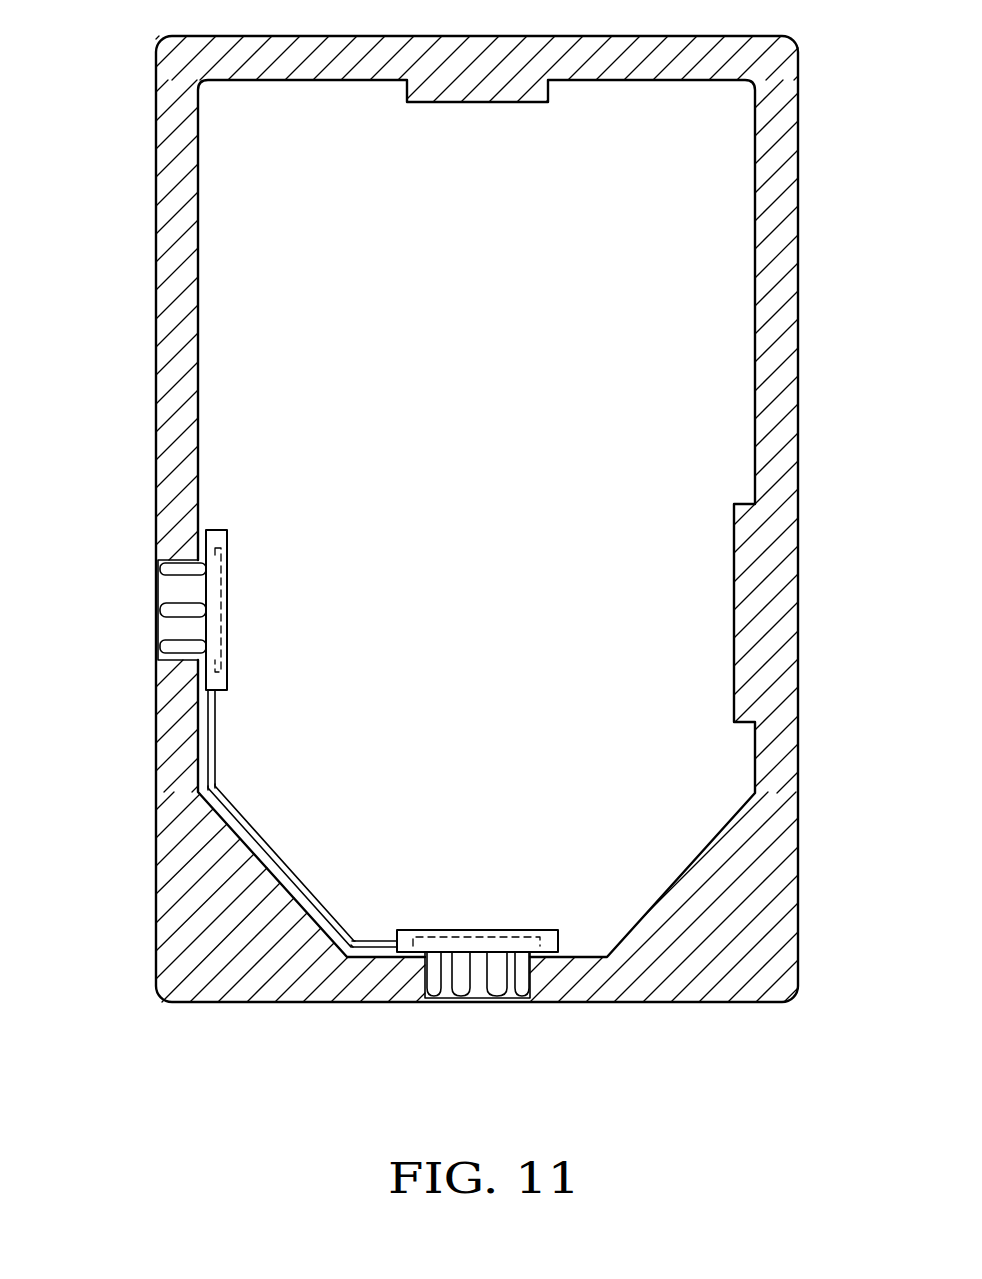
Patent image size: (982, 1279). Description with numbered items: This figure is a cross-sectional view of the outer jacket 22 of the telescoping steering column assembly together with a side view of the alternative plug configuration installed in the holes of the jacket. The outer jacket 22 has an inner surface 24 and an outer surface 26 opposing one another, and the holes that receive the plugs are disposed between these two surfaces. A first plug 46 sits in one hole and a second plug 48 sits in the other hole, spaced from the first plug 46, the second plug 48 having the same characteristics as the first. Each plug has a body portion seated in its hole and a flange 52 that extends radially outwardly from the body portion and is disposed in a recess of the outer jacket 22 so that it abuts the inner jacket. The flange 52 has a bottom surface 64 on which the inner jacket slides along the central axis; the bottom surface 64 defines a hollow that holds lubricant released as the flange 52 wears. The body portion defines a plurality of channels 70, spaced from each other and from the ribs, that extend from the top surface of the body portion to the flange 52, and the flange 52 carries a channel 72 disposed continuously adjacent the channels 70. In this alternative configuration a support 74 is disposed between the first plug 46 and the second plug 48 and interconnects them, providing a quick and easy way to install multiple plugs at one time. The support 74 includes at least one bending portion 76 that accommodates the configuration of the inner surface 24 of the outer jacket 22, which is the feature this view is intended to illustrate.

The outer jacket 22 is at (168, 387).
The inner surface 24 is at (198, 350).
The outer surface 26 is at (155, 935).
The first plug 46 is at (505, 988).
The second plug 48 is at (158, 630).
The flange 52 is at (405, 711).
The bottom surface 64 is at (228, 655).
The channels 70 is at (158, 612).
The channel 72 is at (226, 578).
The support 74 is at (280, 852).
The bending portion 76 is at (217, 792).